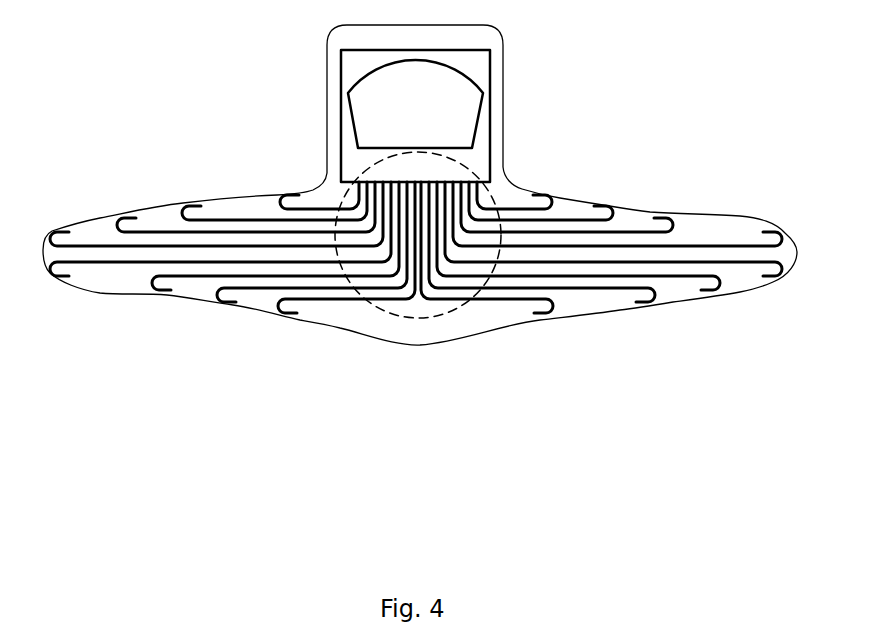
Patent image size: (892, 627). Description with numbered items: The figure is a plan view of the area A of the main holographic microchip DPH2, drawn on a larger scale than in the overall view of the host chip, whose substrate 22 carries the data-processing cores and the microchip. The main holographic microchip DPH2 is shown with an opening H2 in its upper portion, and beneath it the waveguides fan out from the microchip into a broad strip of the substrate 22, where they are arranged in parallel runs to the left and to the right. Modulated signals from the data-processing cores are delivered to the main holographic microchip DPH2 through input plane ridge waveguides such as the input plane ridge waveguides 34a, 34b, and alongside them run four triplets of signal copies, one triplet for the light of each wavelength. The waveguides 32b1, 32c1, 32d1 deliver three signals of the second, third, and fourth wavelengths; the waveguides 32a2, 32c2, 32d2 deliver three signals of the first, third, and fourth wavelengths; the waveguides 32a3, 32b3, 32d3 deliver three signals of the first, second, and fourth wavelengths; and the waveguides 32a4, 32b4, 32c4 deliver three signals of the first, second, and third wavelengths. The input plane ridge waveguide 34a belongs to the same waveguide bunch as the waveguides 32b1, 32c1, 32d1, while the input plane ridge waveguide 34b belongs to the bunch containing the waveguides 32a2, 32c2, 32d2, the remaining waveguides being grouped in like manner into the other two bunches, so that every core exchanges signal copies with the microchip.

The substrate 22 is at (473, 322).
The main holographic microchip DPH2 is at (333, 66).
The opening H2 is at (440, 80).
The area A is at (385, 312).
The input plane ridge waveguide 34a is at (305, 210).
The input plane ridge waveguide 34b is at (518, 210).
The waveguide 32a2 is at (598, 218).
The waveguide 32a3 is at (87, 263).
The waveguide 32a4 is at (747, 265).
The waveguide 32b1 is at (72, 247).
The waveguide 32b3 is at (173, 277).
The waveguide 32b4 is at (713, 280).
The waveguide 32c1 is at (142, 230).
The waveguide 32c2 is at (662, 228).
The waveguide 32c4 is at (648, 294).
The waveguide 32d1 is at (210, 220).
The waveguide 32d2 is at (723, 247).
The waveguide 32d3 is at (240, 288).